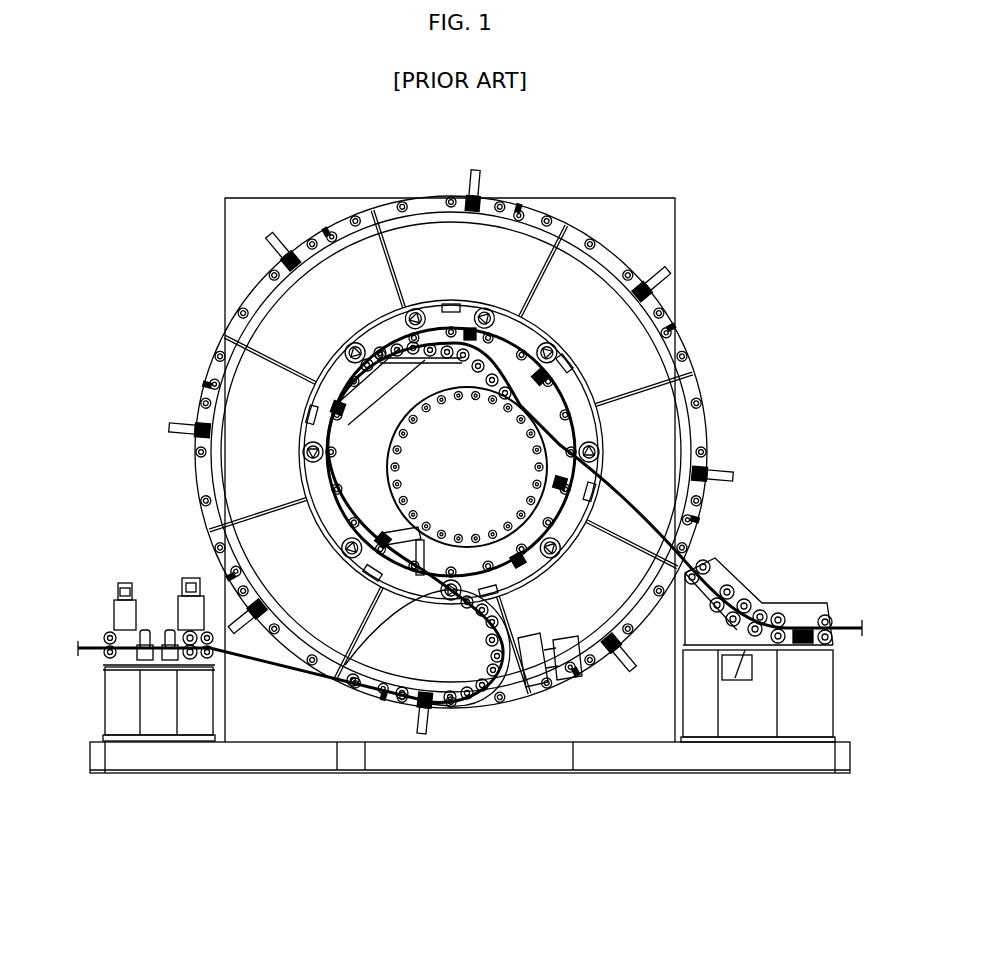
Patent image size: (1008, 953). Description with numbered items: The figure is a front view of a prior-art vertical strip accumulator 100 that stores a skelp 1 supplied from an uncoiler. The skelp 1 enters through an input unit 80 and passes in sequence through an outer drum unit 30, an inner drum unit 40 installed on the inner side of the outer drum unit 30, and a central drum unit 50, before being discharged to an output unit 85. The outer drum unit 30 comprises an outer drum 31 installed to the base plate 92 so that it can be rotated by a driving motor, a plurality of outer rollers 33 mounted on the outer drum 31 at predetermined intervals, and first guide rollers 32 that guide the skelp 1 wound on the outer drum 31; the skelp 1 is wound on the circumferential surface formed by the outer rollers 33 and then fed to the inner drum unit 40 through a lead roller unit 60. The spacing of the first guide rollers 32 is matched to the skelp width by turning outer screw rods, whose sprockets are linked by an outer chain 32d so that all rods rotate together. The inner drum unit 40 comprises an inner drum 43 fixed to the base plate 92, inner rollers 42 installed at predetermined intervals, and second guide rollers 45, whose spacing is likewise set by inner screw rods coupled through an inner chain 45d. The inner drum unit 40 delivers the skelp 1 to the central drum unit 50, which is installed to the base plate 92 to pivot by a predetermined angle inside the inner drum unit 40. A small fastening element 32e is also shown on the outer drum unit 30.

The skelp 1 is at (627, 504).
The outer drum unit 30 is at (222, 468).
The outer drum 31 is at (222, 448).
The first guide rollers 32 is at (486, 168).
The outer chain 32d is at (447, 203).
The fastening element 32e is at (520, 212).
The outer rollers 33 is at (200, 401).
The inner drum unit 40 is at (600, 435).
The inner rollers 42 is at (506, 336).
The inner drum 43 is at (388, 327).
The second guide rollers 45 is at (303, 410).
The inner chain 45d is at (562, 415).
The central drum unit 50 is at (502, 412).
The lead roller unit 60 is at (462, 667).
The input unit 80 is at (93, 697).
The output unit 85 is at (793, 580).
The base plate 92 is at (676, 218).
The vertical strip accumulator 100 is at (300, 782).